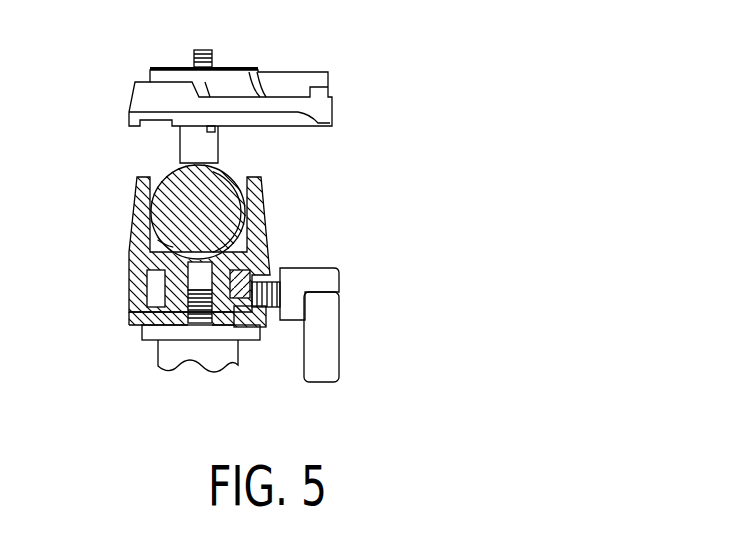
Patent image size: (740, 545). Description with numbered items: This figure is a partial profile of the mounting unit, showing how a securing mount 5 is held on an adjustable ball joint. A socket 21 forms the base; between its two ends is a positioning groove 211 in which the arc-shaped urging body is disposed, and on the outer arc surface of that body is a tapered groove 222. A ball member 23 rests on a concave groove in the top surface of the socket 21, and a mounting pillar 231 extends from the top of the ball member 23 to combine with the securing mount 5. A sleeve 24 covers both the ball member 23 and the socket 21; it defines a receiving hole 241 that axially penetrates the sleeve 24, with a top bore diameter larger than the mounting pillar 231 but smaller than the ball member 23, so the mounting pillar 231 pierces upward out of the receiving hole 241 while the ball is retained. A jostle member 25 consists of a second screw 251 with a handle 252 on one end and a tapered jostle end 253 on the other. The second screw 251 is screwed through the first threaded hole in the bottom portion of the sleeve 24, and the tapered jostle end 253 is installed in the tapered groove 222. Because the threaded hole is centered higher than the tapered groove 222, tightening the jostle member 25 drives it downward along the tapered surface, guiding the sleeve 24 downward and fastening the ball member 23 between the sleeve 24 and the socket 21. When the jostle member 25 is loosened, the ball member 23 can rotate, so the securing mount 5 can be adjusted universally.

The securing mount 5 is at (300, 56).
The socket 21 is at (152, 322).
The positioning groove 211 is at (158, 292).
The tapered groove 222 is at (270, 322).
The ball member 23 is at (223, 182).
The mounting pillar 231 is at (195, 148).
The sleeve 24 is at (261, 193).
The receiving hole 241 is at (247, 237).
The jostle member 25 is at (306, 273).
The second screw 251 is at (241, 300).
The handle 252 is at (330, 343).
The tapered jostle end 253 is at (237, 325).